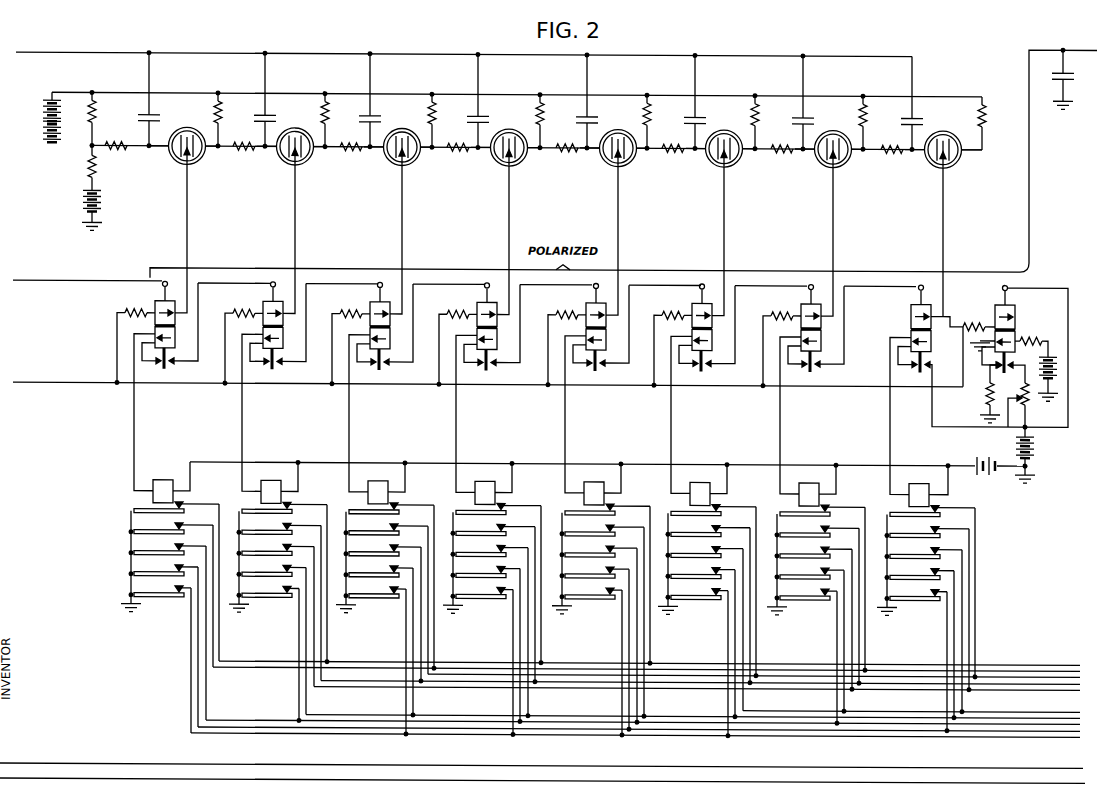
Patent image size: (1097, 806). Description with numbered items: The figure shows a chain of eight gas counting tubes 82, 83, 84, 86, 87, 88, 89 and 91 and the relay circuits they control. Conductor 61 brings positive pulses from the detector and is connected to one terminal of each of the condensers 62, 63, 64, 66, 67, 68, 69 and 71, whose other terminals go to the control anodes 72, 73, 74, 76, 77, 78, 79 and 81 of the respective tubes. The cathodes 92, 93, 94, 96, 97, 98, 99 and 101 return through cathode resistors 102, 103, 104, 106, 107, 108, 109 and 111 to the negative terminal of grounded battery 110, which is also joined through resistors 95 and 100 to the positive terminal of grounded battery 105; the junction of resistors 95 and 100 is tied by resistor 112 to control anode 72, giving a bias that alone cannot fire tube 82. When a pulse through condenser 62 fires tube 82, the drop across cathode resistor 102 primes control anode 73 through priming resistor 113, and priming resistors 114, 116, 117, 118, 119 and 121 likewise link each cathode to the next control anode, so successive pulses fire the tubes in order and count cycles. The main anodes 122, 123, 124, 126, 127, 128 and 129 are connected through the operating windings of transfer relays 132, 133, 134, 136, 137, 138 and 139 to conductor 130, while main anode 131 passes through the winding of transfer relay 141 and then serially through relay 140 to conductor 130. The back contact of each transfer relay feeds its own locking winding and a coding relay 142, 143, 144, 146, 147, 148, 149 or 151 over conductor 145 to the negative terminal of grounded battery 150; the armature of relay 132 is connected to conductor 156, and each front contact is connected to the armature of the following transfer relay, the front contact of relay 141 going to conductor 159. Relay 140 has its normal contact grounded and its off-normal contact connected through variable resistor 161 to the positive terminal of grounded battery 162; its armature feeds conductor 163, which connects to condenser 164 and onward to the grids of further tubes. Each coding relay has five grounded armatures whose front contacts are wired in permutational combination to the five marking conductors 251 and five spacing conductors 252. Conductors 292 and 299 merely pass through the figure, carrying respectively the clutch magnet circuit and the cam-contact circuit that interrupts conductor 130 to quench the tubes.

The conductor 61 is at (104, 52).
The condenser 62 is at (140, 116).
The condenser 63 is at (256, 116).
The condenser 64 is at (361, 115).
The condenser 66 is at (470, 115).
The condenser 67 is at (580, 114).
The condenser 68 is at (685, 114).
The condenser 69 is at (793, 113).
The condenser 71 is at (901, 116).
The control anode 72 is at (170, 152).
The control anode 73 is at (278, 152).
The control anode 74 is at (386, 152).
The control anode 76 is at (492, 152).
The control anode 77 is at (601, 152).
The control anode 78 is at (707, 152).
The control anode 79 is at (816, 152).
The control anode 81 is at (926, 152).
The tube 82 is at (186, 126).
The tube 83 is at (294, 126).
The tube 84 is at (401, 126).
The tube 86 is at (508, 126).
The tube 87 is at (617, 126).
The tube 88 is at (723, 126).
The tube 89 is at (832, 126).
The tube 91 is at (941, 126).
The cathode 92 is at (195, 156).
The cathode 93 is at (304, 156).
The cathode 94 is at (411, 156).
The cathode 96 is at (518, 156).
The cathode 97 is at (627, 156).
The cathode 98 is at (733, 156).
The cathode 99 is at (842, 156).
The cathode 101 is at (958, 153).
The resistor 95 is at (93, 118).
The resistor 100 is at (85, 168).
The battery 105 is at (80, 206).
The battery 110 is at (42, 114).
The cathode resistor 111 is at (985, 112).
The cathode resistor 102 is at (218, 100).
The cathode resistor 103 is at (325, 100).
The cathode resistor 104 is at (432, 100).
The cathode resistor 106 is at (540, 100).
The cathode resistor 107 is at (647, 100).
The cathode resistor 108 is at (755, 100).
The cathode resistor 109 is at (863, 100).
The resistor 112 is at (117, 150).
The priming resistor 113 is at (238, 157).
The priming resistor 114 is at (345, 157).
The priming resistor 116 is at (452, 157).
The priming resistor 117 is at (562, 157).
The priming resistor 118 is at (669, 157).
The priming resistor 119 is at (780, 157).
The priming resistor 121 is at (889, 157).
The main anode 122 is at (186, 165).
The main anode 123 is at (294, 165).
The main anode 124 is at (401, 165).
The main anode 126 is at (508, 165).
The main anode 127 is at (617, 165).
The main anode 128 is at (723, 165).
The main anode 129 is at (832, 165).
The main anode 131 is at (944, 166).
The conductor 130 is at (74, 382).
The conductor 156 is at (64, 280).
The conductor 159 is at (1068, 288).
The conductor 163 is at (1030, 204).
The condenser 164 is at (1055, 88).
The transfer relay 132 is at (155, 305).
The transfer relay 133 is at (263, 305).
The transfer relay 134 is at (370, 305).
The transfer relay 136 is at (477, 305).
The transfer relay 137 is at (586, 305).
The transfer relay 138 is at (692, 305).
The transfer relay 139 is at (801, 305).
The relay 140 is at (1016, 318).
The transfer relay 141 is at (911, 318).
The coding relay 142 is at (162, 479).
The coding relay 143 is at (271, 479).
The coding relay 144 is at (378, 479).
The conductor 145 is at (427, 460).
The coding relay 146 is at (486, 479).
The coding relay 147 is at (594, 479).
The coding relay 148 is at (700, 479).
The coding relay 149 is at (810, 479).
The battery 150 is at (980, 458).
The coding relay 151 is at (920, 479).
The variable resistor 161 is at (1028, 400).
The battery 162 is at (1032, 437).
The conductors 251 is at (1000, 658).
The conductors 252 is at (1000, 705).
The conductor 292 is at (130, 763).
The conductor 299 is at (259, 778).